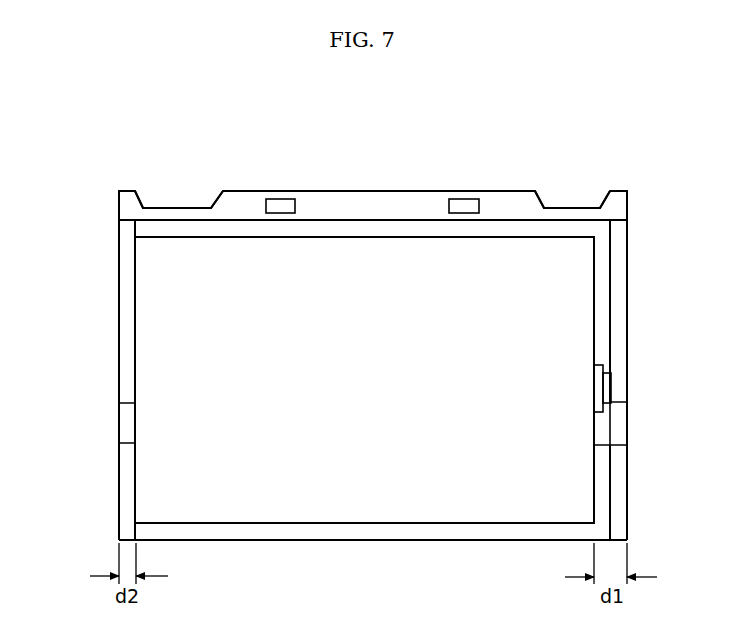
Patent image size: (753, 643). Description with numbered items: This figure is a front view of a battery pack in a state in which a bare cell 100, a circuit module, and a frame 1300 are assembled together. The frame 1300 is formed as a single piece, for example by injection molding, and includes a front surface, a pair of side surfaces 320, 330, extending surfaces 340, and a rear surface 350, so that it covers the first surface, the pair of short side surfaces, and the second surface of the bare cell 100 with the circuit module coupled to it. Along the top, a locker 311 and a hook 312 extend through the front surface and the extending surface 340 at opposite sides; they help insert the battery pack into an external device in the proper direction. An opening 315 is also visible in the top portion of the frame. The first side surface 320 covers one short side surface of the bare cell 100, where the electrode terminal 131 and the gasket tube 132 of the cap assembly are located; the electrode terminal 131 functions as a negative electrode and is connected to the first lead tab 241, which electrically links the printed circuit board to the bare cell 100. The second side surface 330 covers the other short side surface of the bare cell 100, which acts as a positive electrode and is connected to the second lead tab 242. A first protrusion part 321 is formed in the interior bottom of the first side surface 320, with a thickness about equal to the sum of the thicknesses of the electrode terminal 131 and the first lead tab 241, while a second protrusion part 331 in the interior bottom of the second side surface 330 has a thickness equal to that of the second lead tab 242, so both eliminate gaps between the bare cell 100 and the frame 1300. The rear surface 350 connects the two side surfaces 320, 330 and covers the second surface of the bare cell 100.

The frame 1300 is at (103, 181).
The hook 312 is at (176, 207).
The locker 311 is at (572, 200).
The extending surface 340 is at (347, 228).
The opening / button hole 315 is at (462, 203).
The bare cell 100 is at (325, 505).
The second lead tab 242 is at (124, 255).
The second side surface 330 is at (118, 414).
The second protrusion part 331 is at (124, 487).
The first lead tab 241 is at (620, 256).
The first side surface 320 is at (627, 292).
The first protrusion part 321 is at (603, 497).
The electrode terminal 131 is at (607, 382).
The gasket tube 132 is at (603, 411).
The rear surface 350 is at (473, 540).